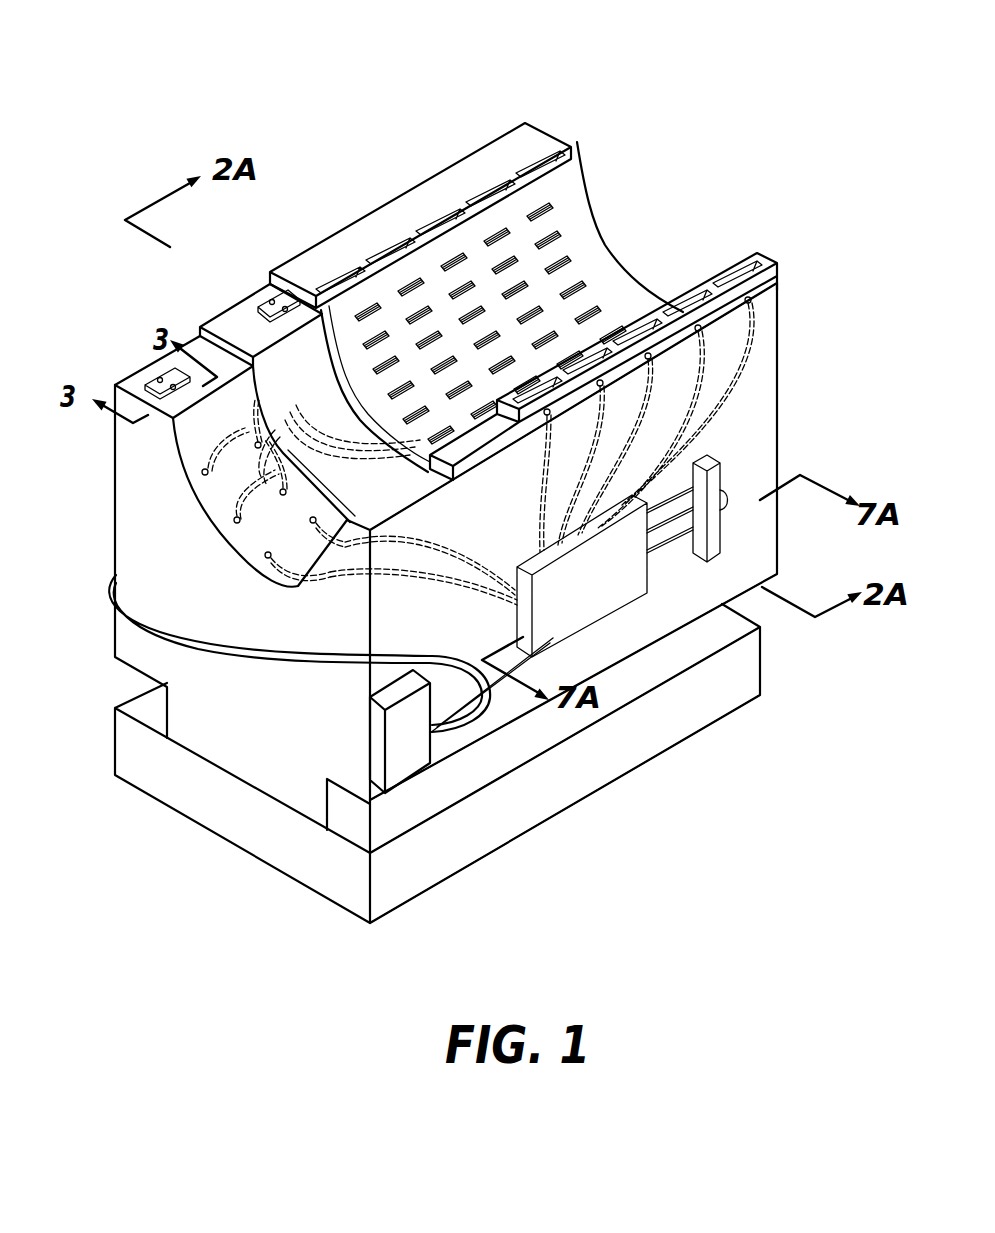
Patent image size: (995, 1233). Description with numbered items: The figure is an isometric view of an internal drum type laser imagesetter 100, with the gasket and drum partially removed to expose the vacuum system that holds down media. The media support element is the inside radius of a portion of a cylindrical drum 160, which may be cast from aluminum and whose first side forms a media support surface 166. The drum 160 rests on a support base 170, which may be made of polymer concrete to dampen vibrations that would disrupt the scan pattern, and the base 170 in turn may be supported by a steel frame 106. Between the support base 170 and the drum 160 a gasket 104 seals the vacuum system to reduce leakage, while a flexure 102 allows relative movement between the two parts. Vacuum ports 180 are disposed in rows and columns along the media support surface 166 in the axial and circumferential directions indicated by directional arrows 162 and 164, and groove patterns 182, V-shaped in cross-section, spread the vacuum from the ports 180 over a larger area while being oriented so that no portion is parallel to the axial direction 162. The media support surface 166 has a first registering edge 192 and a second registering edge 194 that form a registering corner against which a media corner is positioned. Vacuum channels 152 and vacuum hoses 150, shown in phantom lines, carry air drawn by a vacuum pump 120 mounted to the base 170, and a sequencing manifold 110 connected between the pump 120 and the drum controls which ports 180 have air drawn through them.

The imagesetter 100 is at (230, 69).
The flexure 102 is at (165, 378).
The gasket 104 is at (232, 328).
The steel frame 106 is at (740, 667).
The sequencing manifold 110 is at (715, 683).
The vacuum pump 120 is at (400, 767).
The vacuum hoses 150 is at (460, 724).
The vacuum channels 152 is at (740, 357).
The cylindrical drum 160 is at (766, 256).
The axial direction 162 is at (757, 220).
The circumferential direction 164 is at (757, 220).
The media support surface 166 is at (563, 178).
The support base 170 is at (757, 440).
The vacuum ports 180 is at (543, 230).
The groove patterns 182 is at (548, 240).
The first registering edge 192 is at (404, 268).
The second registering edge 194 is at (358, 373).